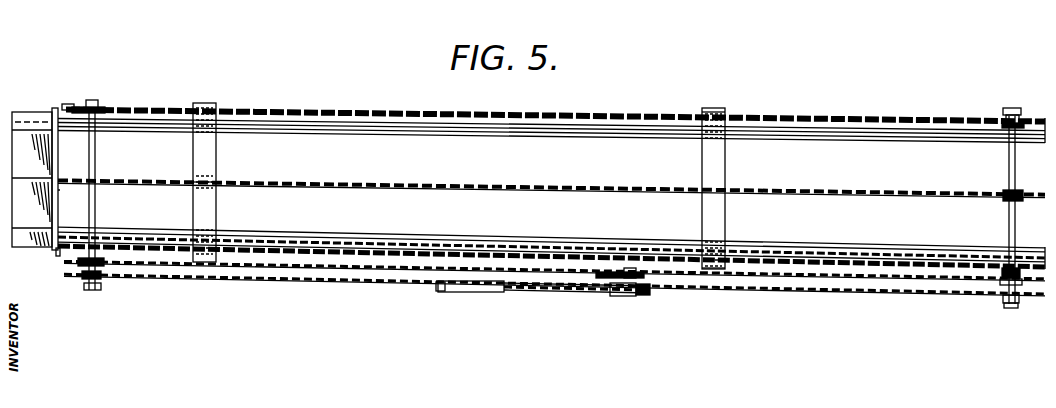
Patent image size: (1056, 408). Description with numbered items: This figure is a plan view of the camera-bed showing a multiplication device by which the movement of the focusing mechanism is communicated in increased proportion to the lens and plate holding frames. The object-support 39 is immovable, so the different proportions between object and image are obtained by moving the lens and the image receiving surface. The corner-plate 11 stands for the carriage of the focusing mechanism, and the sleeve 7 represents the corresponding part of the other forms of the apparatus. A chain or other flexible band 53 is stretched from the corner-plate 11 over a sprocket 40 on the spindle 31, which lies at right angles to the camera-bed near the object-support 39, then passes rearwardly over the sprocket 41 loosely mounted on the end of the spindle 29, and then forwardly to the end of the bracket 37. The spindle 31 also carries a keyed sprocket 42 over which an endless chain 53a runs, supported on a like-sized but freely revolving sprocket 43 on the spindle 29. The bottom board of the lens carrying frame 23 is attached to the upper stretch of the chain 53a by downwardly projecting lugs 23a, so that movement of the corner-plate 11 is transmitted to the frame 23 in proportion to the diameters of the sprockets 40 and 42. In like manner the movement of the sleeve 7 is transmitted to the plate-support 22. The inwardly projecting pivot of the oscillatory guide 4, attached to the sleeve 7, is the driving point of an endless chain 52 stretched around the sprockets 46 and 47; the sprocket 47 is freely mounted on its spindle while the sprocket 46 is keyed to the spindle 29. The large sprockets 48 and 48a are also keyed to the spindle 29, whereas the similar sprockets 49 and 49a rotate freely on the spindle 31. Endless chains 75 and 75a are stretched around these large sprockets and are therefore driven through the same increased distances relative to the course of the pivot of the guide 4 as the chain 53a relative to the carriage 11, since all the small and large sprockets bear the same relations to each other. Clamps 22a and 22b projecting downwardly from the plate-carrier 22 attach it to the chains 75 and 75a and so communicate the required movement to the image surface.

The oscillatory guide 4 is at (630, 272).
The sleeve 7 is at (626, 297).
The corner-plate 11 is at (470, 289).
The plate-support 22 is at (725, 166).
The clamp 22a is at (716, 270).
The clamp 22b is at (726, 104).
The lens carrying frame 23 is at (216, 208).
The downwardly projecting lugs 23a is at (215, 182).
The spindle 29 is at (1010, 116).
The spindle 31 is at (93, 100).
The bracket 37 is at (648, 292).
The object-support 39 is at (58, 144).
The sprocket 40 is at (82, 280).
The sprocket 41 is at (1018, 306).
The sprocket 42 is at (66, 188).
The sprocket 43 is at (1011, 192).
The sprocket 46 is at (992, 282).
The sprocket 47 is at (80, 265).
The large sprocket 48 is at (1002, 270).
The large sprocket 48a is at (1004, 118).
The sprocket 49 is at (62, 254).
The sprocket 49a is at (70, 106).
The endless chain 52 is at (596, 272).
The flexible band 53 is at (290, 287).
The endless chain 53a is at (394, 187).
The endless chain 75 is at (455, 246).
The endless chain 75a is at (598, 104).